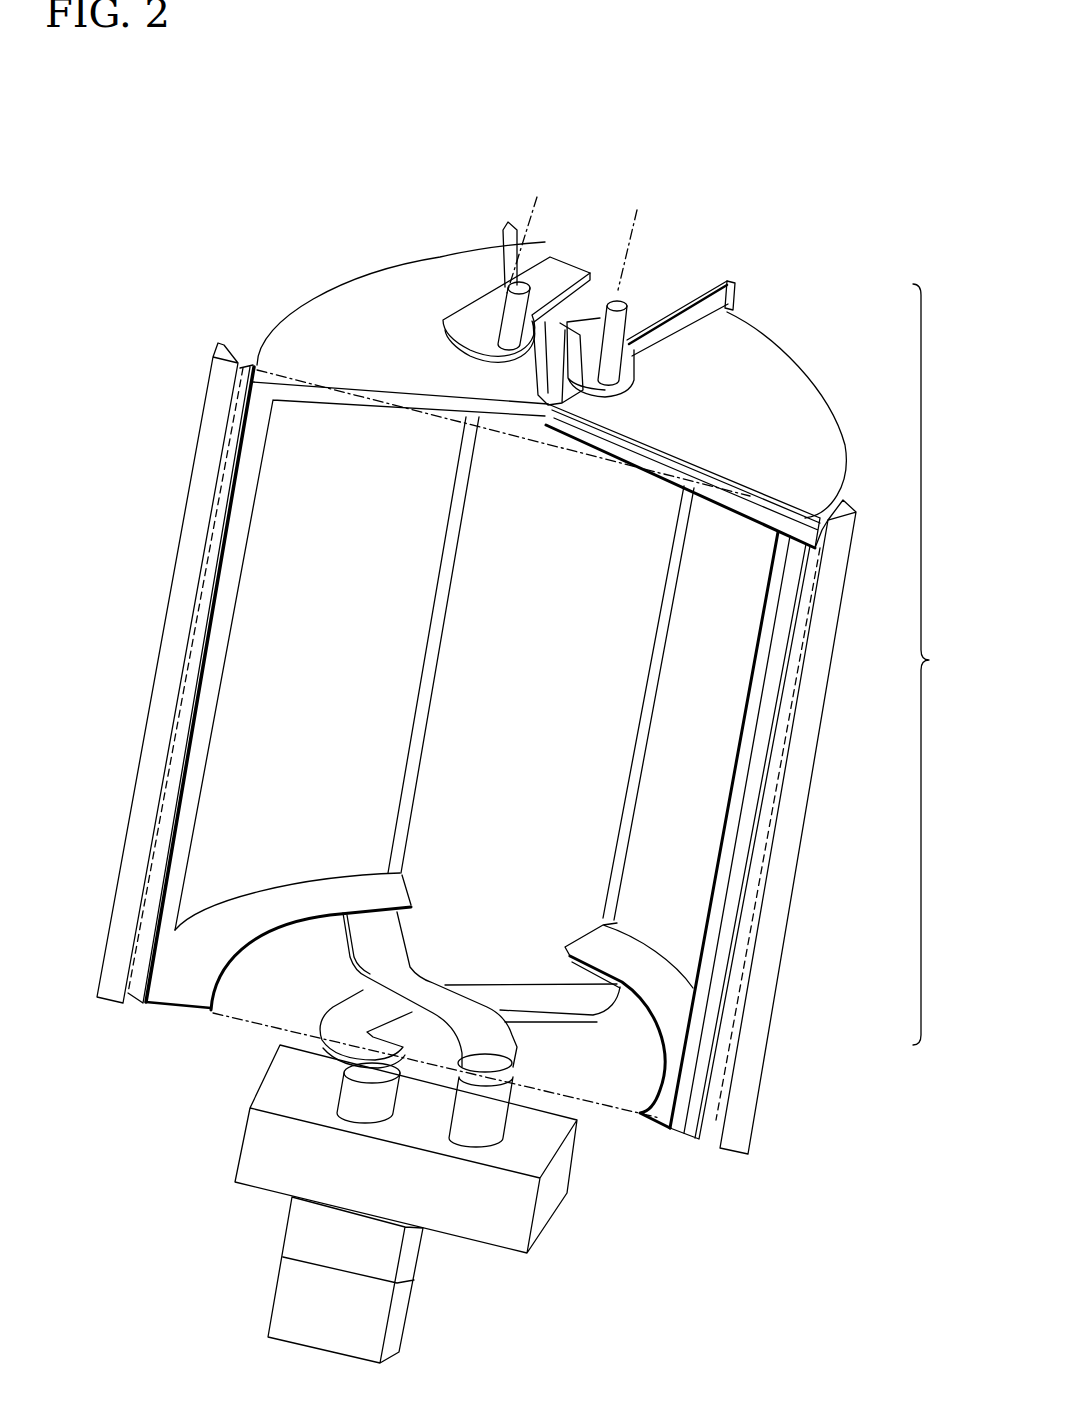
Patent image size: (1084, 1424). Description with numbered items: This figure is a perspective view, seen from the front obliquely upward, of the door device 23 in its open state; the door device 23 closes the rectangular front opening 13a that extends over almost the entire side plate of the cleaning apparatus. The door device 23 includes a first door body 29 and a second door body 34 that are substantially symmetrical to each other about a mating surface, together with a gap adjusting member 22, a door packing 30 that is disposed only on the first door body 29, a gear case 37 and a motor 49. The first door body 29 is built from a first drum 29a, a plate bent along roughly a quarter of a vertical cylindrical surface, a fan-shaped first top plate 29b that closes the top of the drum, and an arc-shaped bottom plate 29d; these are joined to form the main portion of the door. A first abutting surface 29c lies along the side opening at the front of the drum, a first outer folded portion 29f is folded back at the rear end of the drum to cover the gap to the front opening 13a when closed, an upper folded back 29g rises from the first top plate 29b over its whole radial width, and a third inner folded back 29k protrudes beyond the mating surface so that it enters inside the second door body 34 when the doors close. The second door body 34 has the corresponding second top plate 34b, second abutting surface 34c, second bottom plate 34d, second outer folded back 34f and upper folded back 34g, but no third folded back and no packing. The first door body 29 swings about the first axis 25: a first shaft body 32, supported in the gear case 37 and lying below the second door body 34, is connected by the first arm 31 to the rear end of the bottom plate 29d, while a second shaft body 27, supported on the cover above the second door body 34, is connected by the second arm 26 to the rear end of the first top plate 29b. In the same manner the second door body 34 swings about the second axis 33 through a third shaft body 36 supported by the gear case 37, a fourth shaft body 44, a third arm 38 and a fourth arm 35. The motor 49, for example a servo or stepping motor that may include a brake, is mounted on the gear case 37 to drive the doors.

The front opening 13a is at (220, 532).
The gap adjusting member 22 is at (219, 342).
The door device 23 is at (904, 129).
The first axis 25 is at (530, 220).
The second arm 26 is at (568, 258).
The second shaft body 27 is at (503, 297).
The first door body 29 is at (755, 706).
The first drum 29a is at (827, 507).
The first top plate 29b is at (813, 392).
The first abutting surface 29c is at (777, 648).
The bottom plate 29d is at (680, 1038).
The first outer folded portion 29f is at (647, 732).
The upper folded back 29g is at (732, 295).
The third inner folded back 29k is at (715, 923).
The door packing 30 is at (657, 457).
The first arm 31 is at (513, 987).
The first shaft body 32 is at (343, 1083).
The second axis 33 is at (637, 260).
The second door body 34 is at (308, 571).
The second top plate 34b is at (318, 307).
The second abutting surface 34c is at (228, 583).
The second bottom plate 34d is at (273, 935).
The second outer folded back 34f is at (445, 637).
The upper folded back 34g is at (500, 253).
The fourth arm 35 is at (630, 380).
The third shaft body 36 is at (513, 1085).
The gear case 37 is at (568, 1180).
The third arm 38 is at (407, 942).
The fourth shaft body 44 is at (625, 345).
The motor 49 is at (413, 1313).